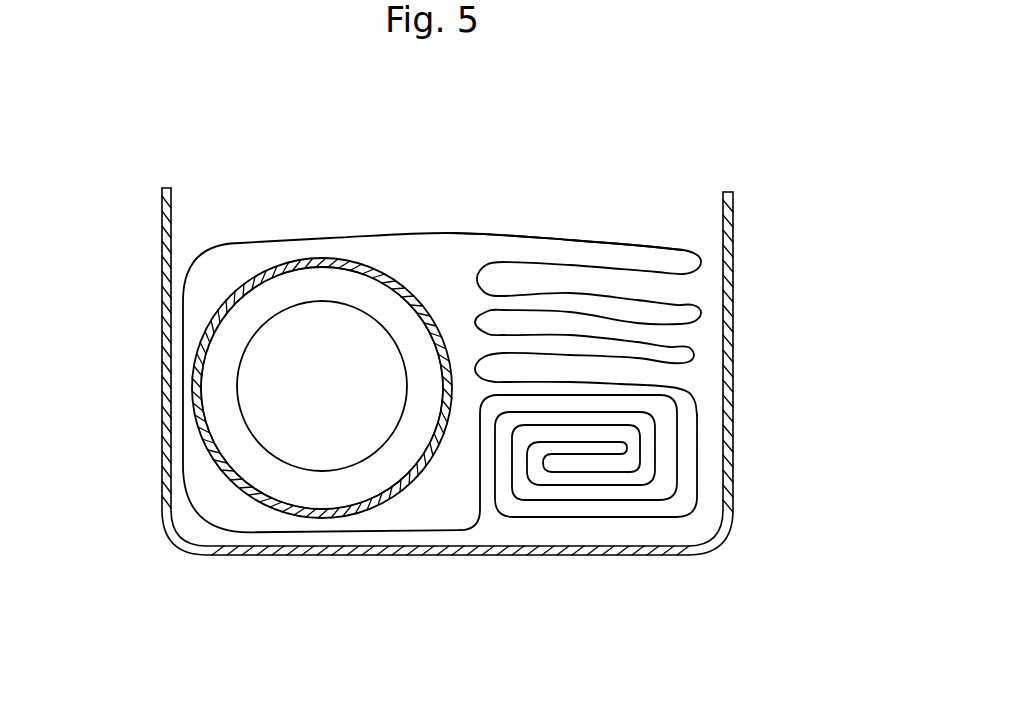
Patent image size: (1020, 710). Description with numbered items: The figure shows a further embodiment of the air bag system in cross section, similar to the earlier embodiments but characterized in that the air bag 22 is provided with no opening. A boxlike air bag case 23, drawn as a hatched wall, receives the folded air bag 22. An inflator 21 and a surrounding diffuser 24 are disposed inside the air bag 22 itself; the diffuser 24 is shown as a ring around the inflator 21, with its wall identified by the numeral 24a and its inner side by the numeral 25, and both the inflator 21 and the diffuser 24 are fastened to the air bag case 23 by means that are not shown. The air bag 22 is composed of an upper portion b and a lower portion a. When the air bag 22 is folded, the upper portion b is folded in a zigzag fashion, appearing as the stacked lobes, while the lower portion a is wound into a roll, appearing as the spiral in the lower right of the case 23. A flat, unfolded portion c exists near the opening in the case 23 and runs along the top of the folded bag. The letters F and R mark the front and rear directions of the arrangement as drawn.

The inflator 21 is at (335, 405).
The air bag 22 is at (518, 236).
The air bag case 23 is at (736, 450).
The diffuser 24 is at (273, 258).
The hatched wall of member 24 24a is at (440, 332).
The inner surface of member 24 25 is at (420, 403).
The lower portion a is at (652, 520).
The upper portion b is at (660, 276).
The flat unfolded portion c is at (631, 243).
The front direction F is at (123, 386).
The rear direction R is at (793, 408).